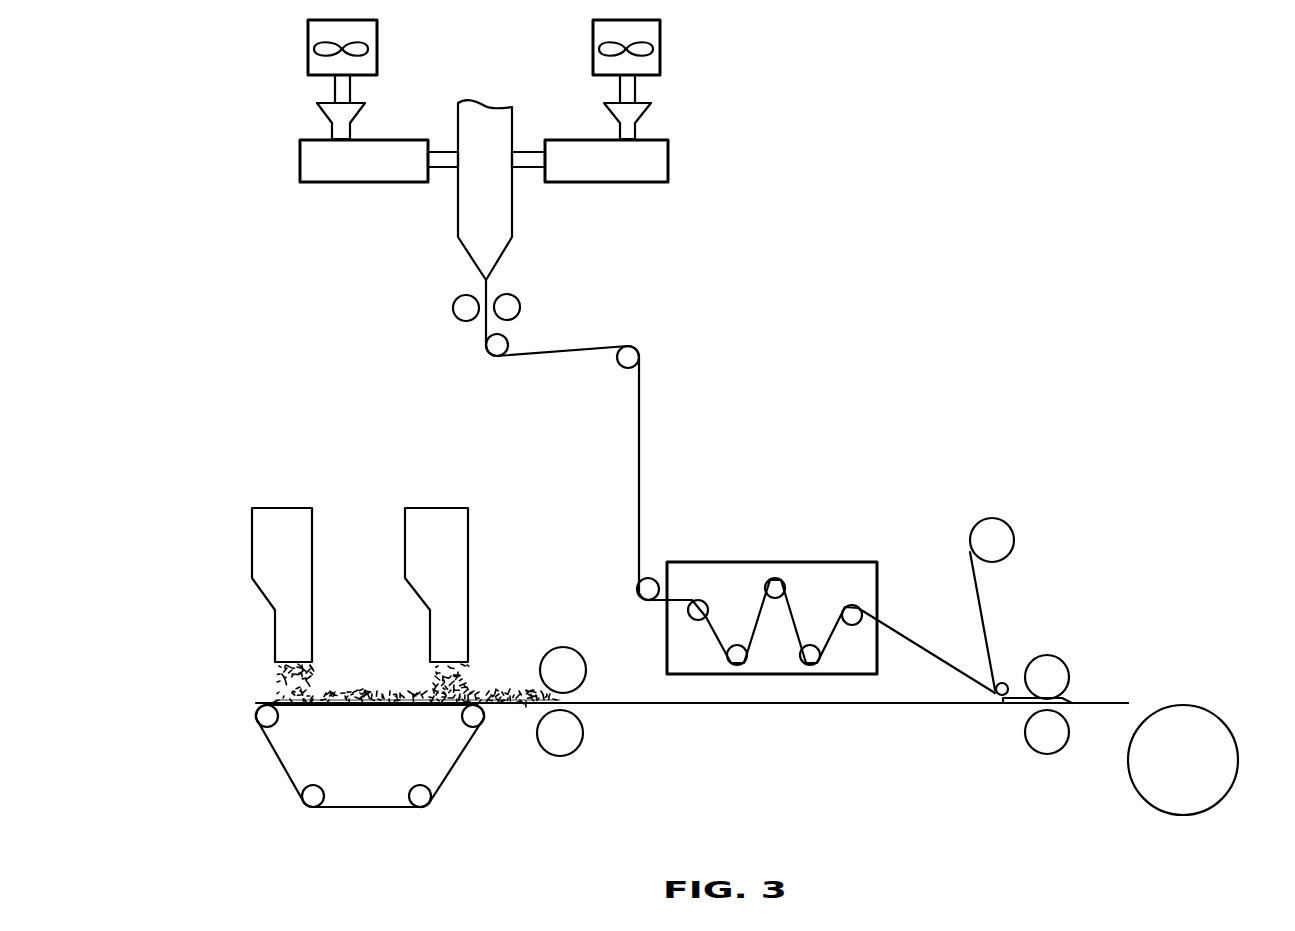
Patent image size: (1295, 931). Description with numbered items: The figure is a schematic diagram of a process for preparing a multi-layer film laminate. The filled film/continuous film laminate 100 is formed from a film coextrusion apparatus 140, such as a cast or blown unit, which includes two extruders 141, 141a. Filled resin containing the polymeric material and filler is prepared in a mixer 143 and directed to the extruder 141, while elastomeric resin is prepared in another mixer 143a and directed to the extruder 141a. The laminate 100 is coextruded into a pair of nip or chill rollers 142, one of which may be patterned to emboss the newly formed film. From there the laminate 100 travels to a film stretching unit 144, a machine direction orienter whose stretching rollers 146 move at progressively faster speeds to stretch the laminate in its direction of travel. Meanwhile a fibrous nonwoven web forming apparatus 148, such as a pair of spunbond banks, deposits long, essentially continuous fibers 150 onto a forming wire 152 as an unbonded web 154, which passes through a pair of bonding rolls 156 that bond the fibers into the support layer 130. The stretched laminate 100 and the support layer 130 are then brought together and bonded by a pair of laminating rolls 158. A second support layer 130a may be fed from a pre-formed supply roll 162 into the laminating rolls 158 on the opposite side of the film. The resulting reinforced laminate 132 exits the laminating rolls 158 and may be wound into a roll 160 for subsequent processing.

The filled film/continuous film laminate 100 is at (640, 431).
The support layer 130 is at (665, 705).
The second support layer 130a is at (984, 616).
The reinforced laminate 132 is at (1125, 703).
The film coextrusion apparatus 140 is at (487, 112).
The extruder 141 is at (665, 163).
The extruder 141a is at (307, 163).
The nip or chill rollers 142 is at (456, 304).
The mixer 143 is at (662, 58).
The mixer 143a is at (308, 40).
The film stretching unit 144 is at (781, 546).
The stretching rollers 146 is at (699, 600).
The fibrous nonwoven web forming apparatus 148 is at (290, 508).
The continuous fibers 150 is at (432, 671).
The forming wire 152 is at (375, 808).
The unbonded web 154 is at (512, 690).
The bonding rolls 156 is at (570, 647).
The laminating rolls 158 is at (1062, 666).
The roll 160 is at (1238, 772).
The supply roll 162 is at (1010, 532).